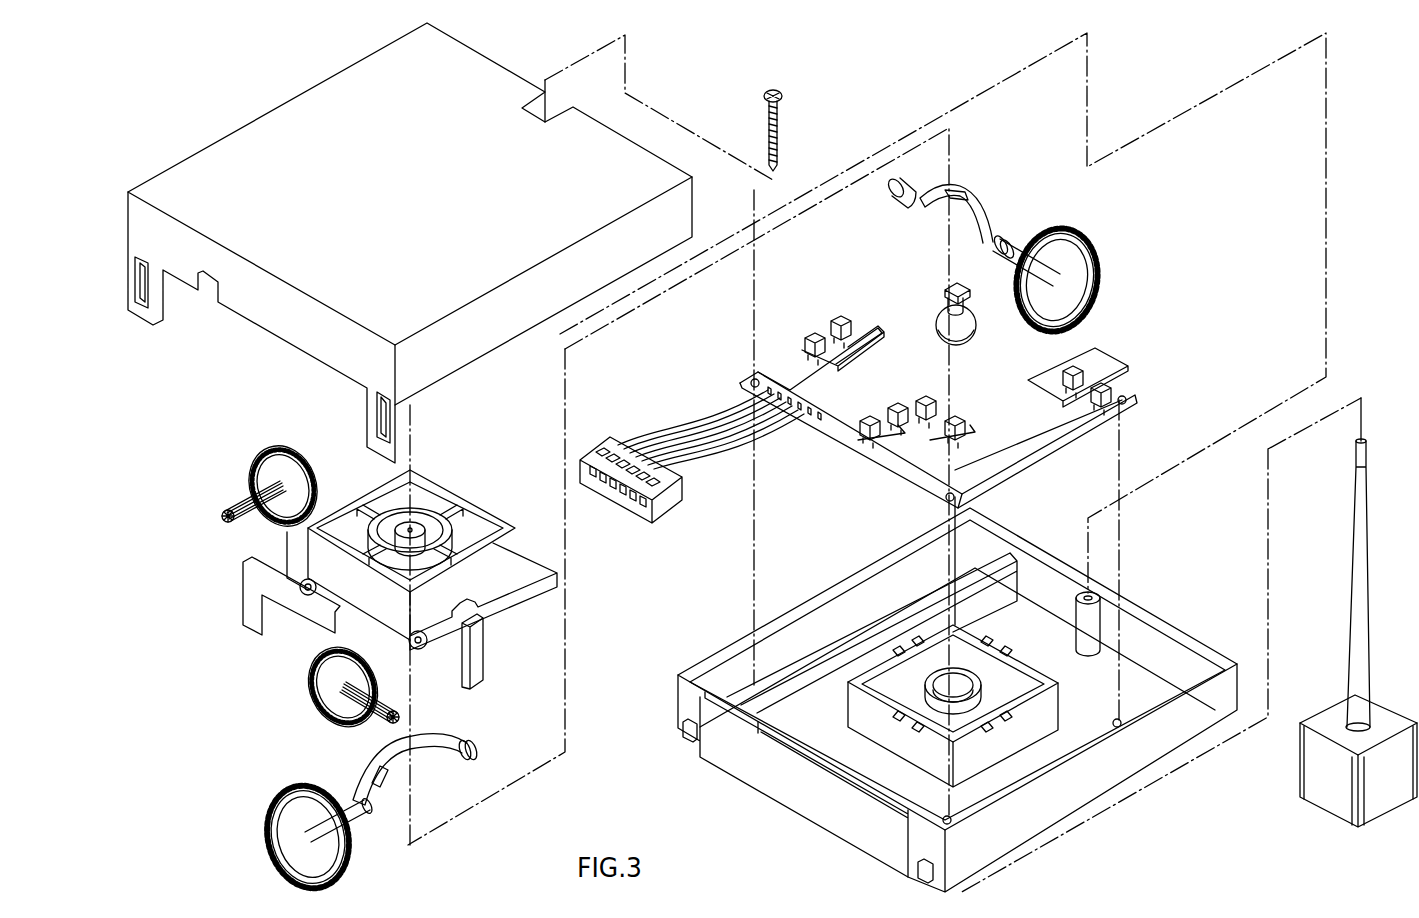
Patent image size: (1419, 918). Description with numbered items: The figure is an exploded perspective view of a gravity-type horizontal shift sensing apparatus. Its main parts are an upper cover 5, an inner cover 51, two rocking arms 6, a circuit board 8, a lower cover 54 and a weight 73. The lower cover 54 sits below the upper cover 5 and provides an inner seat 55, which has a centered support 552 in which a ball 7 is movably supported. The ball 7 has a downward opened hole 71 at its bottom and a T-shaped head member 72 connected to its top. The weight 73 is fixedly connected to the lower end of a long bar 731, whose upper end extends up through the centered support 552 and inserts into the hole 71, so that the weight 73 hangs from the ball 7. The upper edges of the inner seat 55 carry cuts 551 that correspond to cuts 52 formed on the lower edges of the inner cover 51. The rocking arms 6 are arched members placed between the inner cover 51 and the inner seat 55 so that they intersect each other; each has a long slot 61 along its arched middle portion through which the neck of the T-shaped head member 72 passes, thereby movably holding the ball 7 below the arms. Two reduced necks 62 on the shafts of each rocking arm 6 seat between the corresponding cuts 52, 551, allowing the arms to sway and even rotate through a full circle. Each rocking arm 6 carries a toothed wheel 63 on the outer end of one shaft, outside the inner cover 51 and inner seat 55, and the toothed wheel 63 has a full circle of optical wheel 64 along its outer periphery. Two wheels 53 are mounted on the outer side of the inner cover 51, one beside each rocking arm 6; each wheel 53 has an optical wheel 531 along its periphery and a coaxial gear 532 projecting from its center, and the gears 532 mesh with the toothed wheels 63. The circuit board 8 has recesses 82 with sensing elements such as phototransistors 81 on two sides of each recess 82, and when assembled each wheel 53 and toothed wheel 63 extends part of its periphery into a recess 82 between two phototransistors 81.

The upper cover 5 is at (250, 182).
The inner cover 51 is at (453, 502).
The cuts 52 is at (486, 626).
The wheels 53 is at (296, 595).
The optical wheel 531 is at (258, 452).
The gear 532 is at (235, 495).
The lower cover 54 is at (957, 694).
The inner seat 55 is at (931, 737).
The cuts 551 is at (1003, 703).
The centered support 552 is at (1053, 667).
The rocking arms 6 is at (681, 536).
The long slot 61 is at (407, 737).
The reduced necks 62 is at (463, 742).
The toothed wheel 63 is at (681, 558).
The optical wheel 64 is at (305, 885).
The ball 7 is at (958, 328).
The hole 71 is at (955, 347).
The T-shaped head member 72 is at (942, 292).
The weight 73 is at (1358, 612).
The long bar 731 is at (1358, 547).
The circuit board 8 is at (860, 419).
The phototransistors 81 is at (803, 340).
The recesses 82 is at (840, 353).